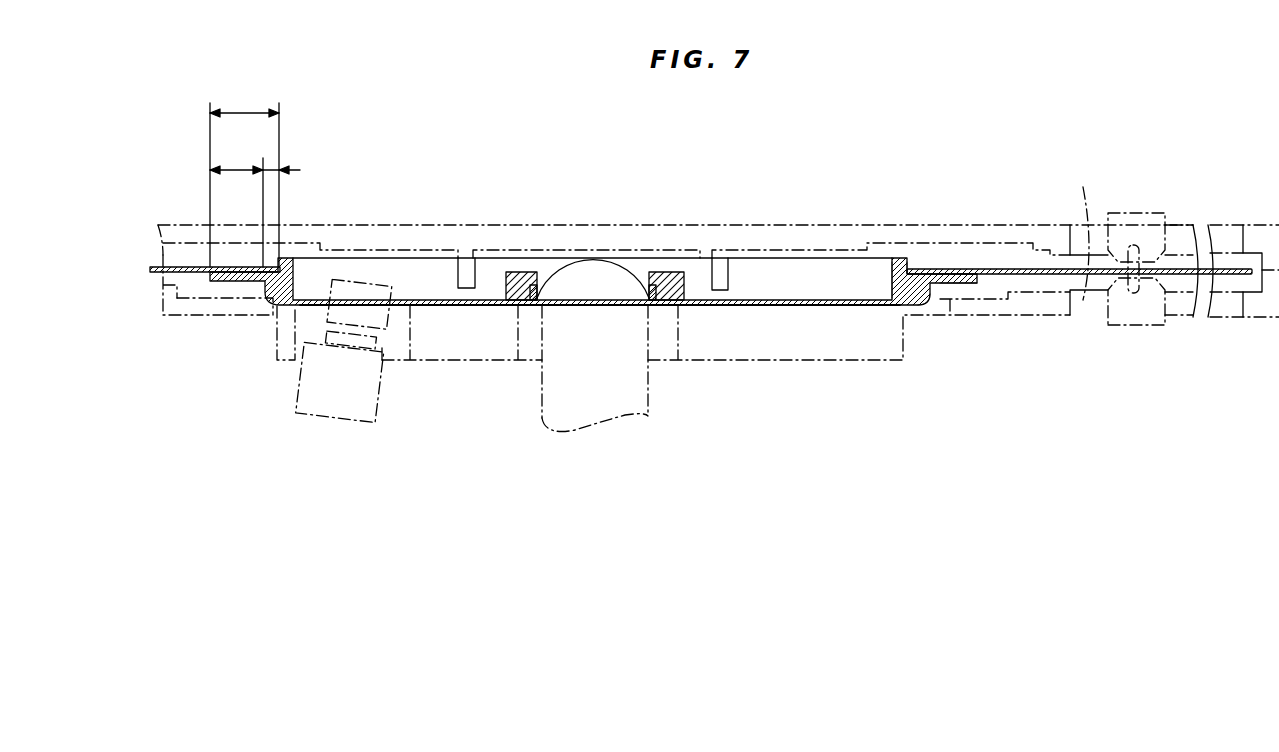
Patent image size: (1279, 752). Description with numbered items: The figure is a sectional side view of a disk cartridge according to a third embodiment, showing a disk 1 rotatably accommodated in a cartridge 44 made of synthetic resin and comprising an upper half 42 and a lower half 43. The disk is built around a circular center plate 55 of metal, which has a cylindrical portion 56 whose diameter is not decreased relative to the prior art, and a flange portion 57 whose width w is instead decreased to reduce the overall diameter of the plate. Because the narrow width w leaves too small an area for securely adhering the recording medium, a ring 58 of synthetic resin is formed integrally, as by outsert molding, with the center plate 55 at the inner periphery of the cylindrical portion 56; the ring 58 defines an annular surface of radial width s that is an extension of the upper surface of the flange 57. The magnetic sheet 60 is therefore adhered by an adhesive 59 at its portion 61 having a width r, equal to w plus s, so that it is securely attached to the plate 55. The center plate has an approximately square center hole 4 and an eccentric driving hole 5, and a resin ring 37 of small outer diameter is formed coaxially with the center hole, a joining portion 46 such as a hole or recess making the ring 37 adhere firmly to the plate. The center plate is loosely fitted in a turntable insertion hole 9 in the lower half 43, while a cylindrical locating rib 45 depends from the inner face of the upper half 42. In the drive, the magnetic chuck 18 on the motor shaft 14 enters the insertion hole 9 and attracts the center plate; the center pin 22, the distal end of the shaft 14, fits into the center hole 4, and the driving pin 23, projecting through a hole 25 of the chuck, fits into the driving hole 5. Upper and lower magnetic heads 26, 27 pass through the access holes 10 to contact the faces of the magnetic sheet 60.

The floppy disk 1 is at (1180, 280).
The center hole 4 is at (545, 268).
The eccentric driving hole 5 is at (413, 298).
The turntable insertion hole 9 is at (240, 305).
The access holes 10 is at (1072, 248).
The motor shaft 14 is at (543, 418).
The magnetic chuck 18 is at (700, 368).
The center pin 22 is at (592, 258).
The driving pin 23 is at (325, 403).
The hole 25 is at (403, 350).
The upper magnetic head 26 is at (1150, 222).
The lower magnetic head 27 is at (1121, 315).
The ring 37 is at (672, 278).
The upper half 42 is at (368, 232).
The lower half 43 is at (188, 305).
The cartridge 44 is at (1228, 320).
The cylindrical locating rib 45 is at (725, 287).
The joining portion 46 is at (537, 310).
The circular center plate 55 is at (793, 310).
The cylindrical portion 56 is at (935, 289).
The flange portion 57 is at (962, 284).
The ring 58 is at (891, 287).
The adhesive 59 is at (962, 277).
The magnetic sheet 60 is at (1106, 272).
The adhered portion 61 is at (248, 268).
The width r is at (243, 112).
The width w is at (235, 169).
The radial width s is at (272, 169).